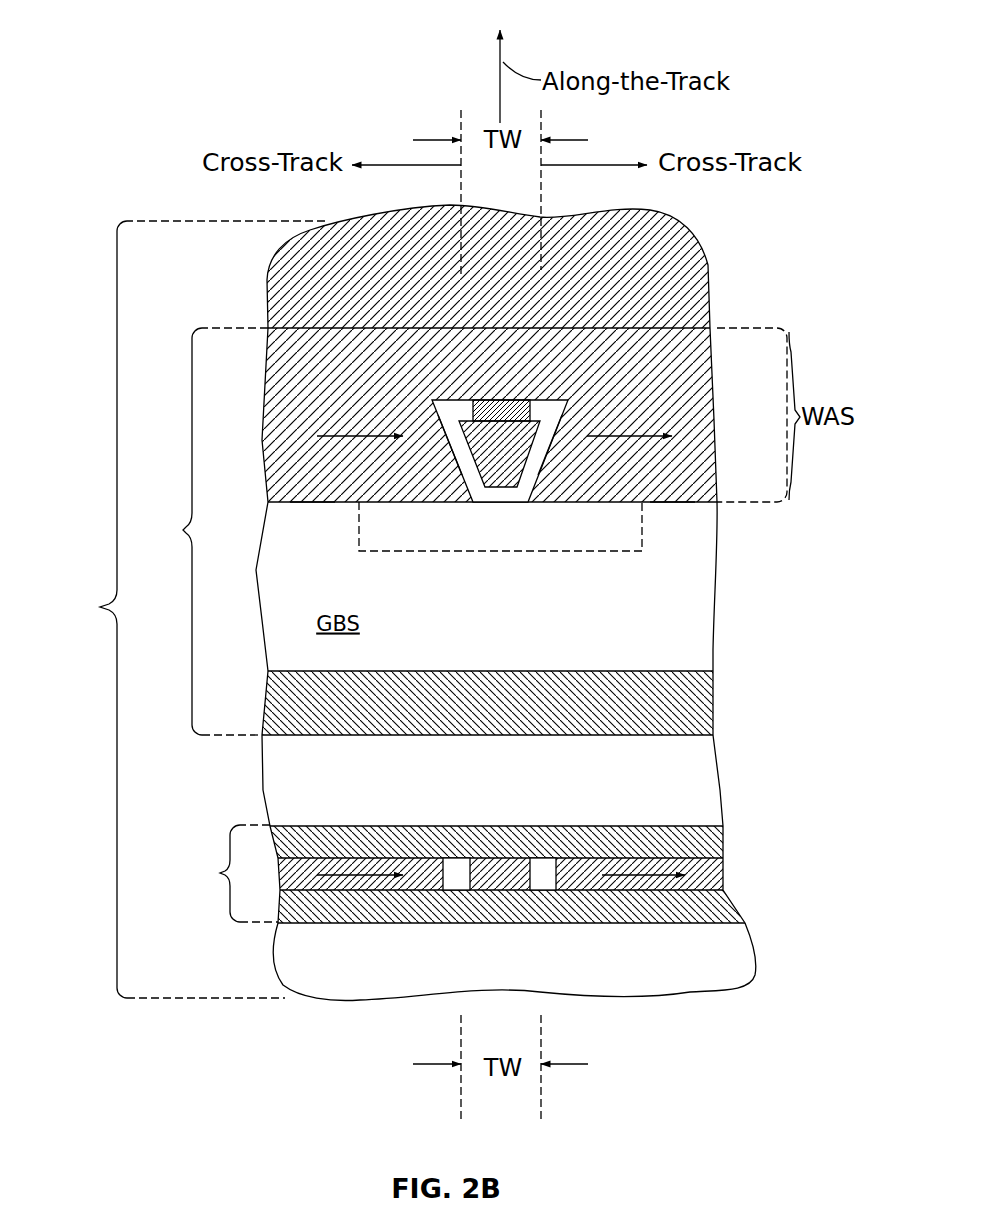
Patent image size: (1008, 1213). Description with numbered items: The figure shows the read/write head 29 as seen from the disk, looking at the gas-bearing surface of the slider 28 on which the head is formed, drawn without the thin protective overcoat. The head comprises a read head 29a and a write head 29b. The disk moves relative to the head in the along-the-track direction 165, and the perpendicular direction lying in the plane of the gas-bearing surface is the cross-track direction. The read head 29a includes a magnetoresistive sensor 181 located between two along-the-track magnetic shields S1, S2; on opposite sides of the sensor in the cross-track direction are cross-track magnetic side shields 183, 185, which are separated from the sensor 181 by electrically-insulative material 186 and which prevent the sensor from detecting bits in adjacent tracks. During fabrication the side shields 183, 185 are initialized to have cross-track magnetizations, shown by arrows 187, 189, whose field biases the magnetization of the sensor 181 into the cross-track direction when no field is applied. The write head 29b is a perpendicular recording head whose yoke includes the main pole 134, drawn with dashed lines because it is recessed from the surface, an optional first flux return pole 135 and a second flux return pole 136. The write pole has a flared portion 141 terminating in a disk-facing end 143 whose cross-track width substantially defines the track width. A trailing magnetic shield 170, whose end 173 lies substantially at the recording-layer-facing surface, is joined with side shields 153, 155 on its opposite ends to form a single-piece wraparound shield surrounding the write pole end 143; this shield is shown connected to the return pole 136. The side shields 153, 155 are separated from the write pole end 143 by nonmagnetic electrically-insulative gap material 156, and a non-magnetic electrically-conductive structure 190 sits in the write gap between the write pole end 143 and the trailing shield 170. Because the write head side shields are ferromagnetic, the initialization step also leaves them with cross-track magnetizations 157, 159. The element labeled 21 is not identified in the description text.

The along-the-track direction 165 is at (503, 48).
The second flux return pole 136 is at (695, 247).
The trailing magnetic shield 170 is at (585, 327).
The disk-facing end of trailing shield 173 is at (664, 388).
The side shield 153 is at (680, 458).
The side shield 155 is at (348, 456).
The electrically-conductive structure 190 is at (497, 403).
The flared portion of write pole 141 is at (473, 458).
The disk-facing end of write pole 143 is at (500, 487).
The nonmagnetic electrically-insulative gap material 156 is at (475, 492).
The cross-track magnetization 159 is at (312, 503).
The cross-track magnetization 157 is at (668, 503).
The main pole 134 is at (604, 548).
The first flux return pole 135 is at (716, 688).
The slider 28 is at (723, 756).
The cross-track magnetic side shield 185 is at (322, 867).
The magnetoresistive read element 181 is at (524, 868).
The cross-track magnetic side shield 183 is at (710, 873).
The cross-track magnetization arrow 189 is at (362, 877).
The electrically-insulative material 186 is at (457, 874).
The cross-track magnetization arrow 187 is at (643, 877).
The bottom shield boundary 21 is at (697, 924).
The read/write head 29 is at (196, 609).
The read head 29a is at (225, 873).
The write head 29b is at (202, 531).
The along-the-track magnetic shield S1 is at (730, 902).
The along-the-track magnetic shield S2 is at (712, 837).